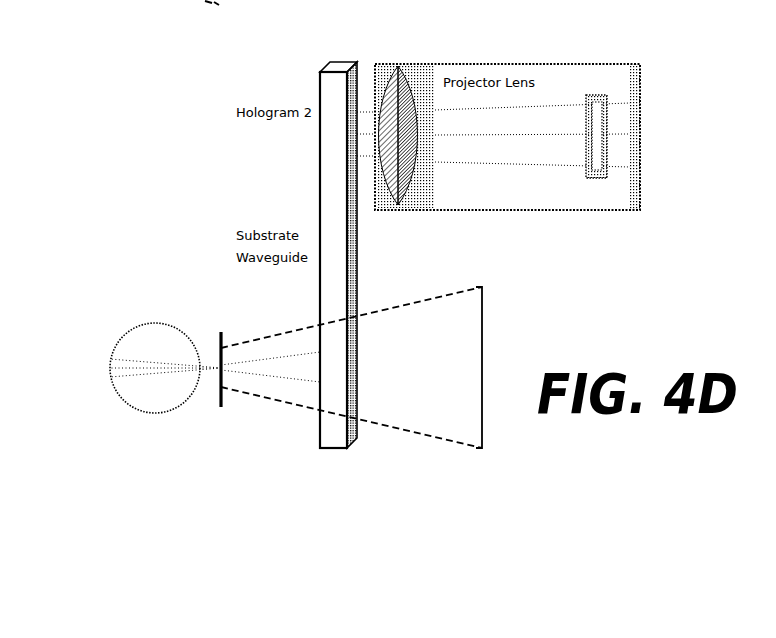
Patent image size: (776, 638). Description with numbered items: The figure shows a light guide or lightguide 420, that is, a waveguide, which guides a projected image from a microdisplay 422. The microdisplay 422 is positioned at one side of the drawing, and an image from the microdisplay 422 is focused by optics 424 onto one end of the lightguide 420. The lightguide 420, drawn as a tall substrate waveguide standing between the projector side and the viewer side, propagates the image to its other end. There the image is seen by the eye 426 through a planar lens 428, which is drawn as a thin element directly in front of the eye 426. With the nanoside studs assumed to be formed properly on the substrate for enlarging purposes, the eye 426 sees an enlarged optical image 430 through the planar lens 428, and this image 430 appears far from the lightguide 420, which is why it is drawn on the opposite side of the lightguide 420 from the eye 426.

The lightguide 420 is at (343, 237).
The microdisplay 422 is at (643, 134).
The optics 424 is at (407, 62).
The eye 426 is at (165, 350).
The planar lens 428 is at (259, 392).
The enlarged optical image 430 is at (362, 350).